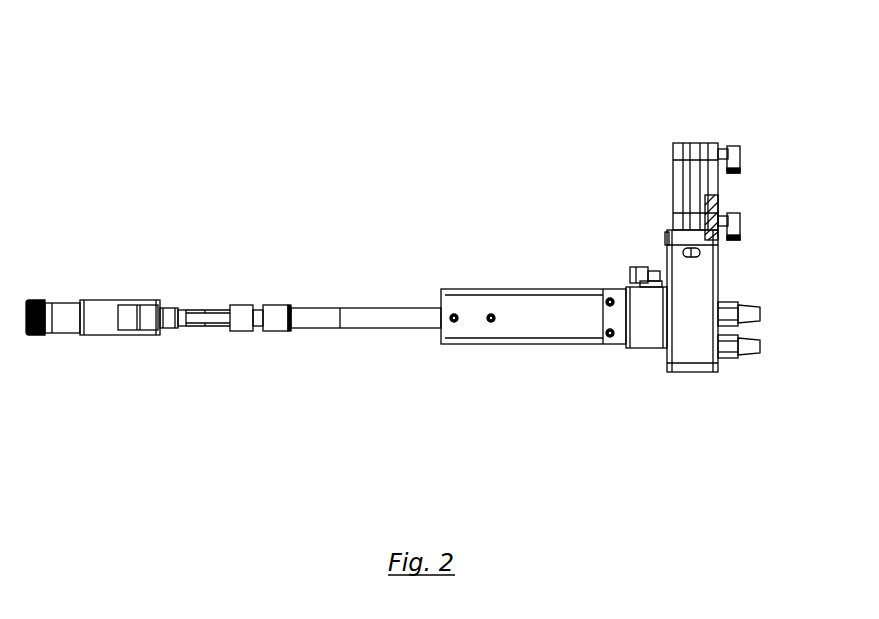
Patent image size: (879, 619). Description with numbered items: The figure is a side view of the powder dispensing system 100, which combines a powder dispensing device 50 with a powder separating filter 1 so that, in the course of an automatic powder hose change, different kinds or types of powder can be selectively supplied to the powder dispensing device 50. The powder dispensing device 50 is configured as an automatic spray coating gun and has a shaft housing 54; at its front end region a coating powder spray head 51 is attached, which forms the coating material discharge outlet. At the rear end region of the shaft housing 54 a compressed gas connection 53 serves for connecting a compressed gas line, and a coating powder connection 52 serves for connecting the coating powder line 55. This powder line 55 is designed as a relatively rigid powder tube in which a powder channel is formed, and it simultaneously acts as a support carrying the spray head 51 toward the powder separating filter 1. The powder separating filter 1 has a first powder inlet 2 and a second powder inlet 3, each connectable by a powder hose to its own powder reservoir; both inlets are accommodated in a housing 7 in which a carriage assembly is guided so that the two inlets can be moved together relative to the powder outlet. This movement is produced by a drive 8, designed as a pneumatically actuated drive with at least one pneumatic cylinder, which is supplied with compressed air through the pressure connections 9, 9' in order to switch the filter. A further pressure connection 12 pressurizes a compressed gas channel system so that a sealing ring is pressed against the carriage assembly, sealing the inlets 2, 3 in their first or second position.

The powder dispensing system 100 is at (398, 138).
The powder separating filter 1 is at (777, 143).
The first powder inlet 2 is at (738, 318).
The second powder inlet 3 is at (745, 347).
The housing 7 is at (690, 318).
The drive 8 is at (690, 173).
The pressure connection 9 is at (720, 95).
The pressure connection 9' is at (737, 160).
The pressure connection 12 is at (640, 270).
The powder dispensing device 50 is at (265, 256).
The coating powder spray head 51 is at (37, 318).
The coating powder connection 52 is at (177, 320).
The compressed gas connection 53 is at (275, 320).
The shaft housing 54 is at (100, 333).
The coating powder line 55 is at (362, 320).